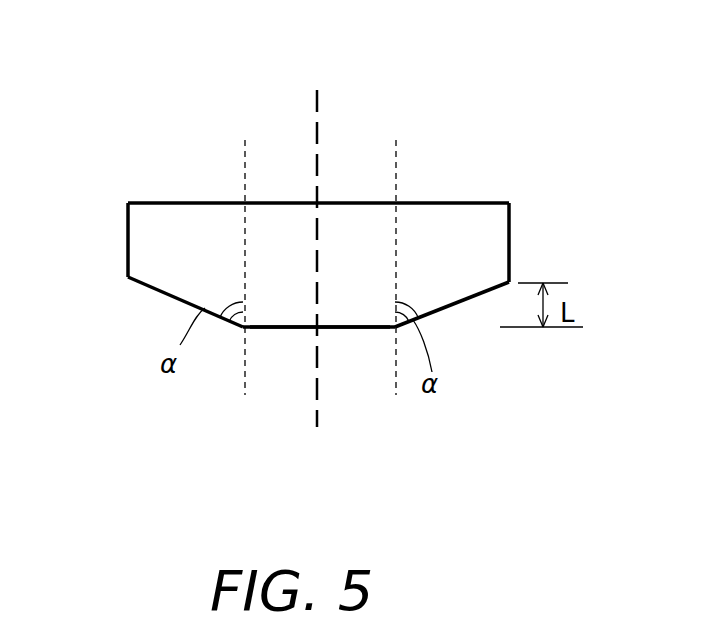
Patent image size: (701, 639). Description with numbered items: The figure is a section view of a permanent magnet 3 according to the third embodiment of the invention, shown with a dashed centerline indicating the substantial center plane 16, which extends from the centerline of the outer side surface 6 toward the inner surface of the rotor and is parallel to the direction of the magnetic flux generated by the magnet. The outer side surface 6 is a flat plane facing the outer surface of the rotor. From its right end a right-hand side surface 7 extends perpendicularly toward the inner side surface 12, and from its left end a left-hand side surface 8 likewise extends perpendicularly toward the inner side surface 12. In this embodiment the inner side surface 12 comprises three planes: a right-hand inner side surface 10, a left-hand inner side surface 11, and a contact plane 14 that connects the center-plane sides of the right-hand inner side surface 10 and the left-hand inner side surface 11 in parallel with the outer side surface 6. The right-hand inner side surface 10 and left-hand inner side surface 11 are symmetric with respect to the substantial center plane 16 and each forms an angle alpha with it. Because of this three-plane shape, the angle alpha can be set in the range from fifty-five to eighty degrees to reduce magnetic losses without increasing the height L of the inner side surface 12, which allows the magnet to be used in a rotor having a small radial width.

The permanent magnet 3 is at (312, 246).
The outer side surface 6 is at (206, 202).
The right-hand side surface 7 is at (509, 240).
The left-hand side surface 8 is at (128, 228).
The right-hand inner side surface 10 is at (448, 307).
The left-hand inner side surface 11 is at (158, 291).
The inner side surface 12 is at (348, 337).
The contact plane 14 is at (278, 330).
The substantial center plane 16 is at (321, 138).